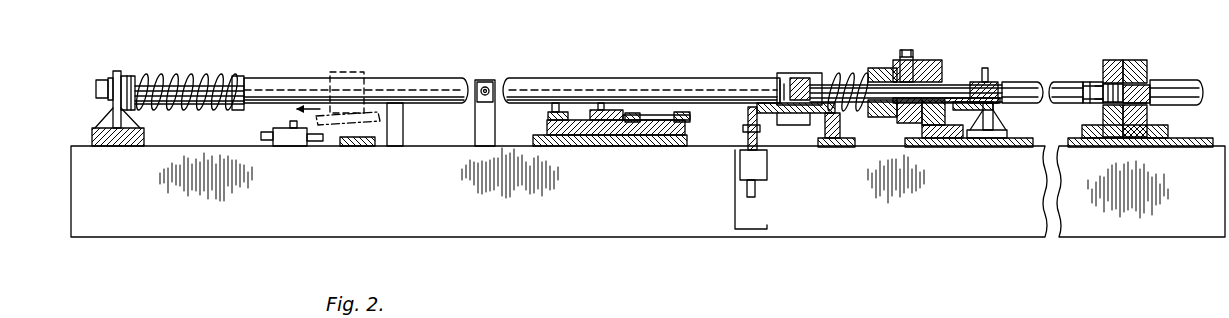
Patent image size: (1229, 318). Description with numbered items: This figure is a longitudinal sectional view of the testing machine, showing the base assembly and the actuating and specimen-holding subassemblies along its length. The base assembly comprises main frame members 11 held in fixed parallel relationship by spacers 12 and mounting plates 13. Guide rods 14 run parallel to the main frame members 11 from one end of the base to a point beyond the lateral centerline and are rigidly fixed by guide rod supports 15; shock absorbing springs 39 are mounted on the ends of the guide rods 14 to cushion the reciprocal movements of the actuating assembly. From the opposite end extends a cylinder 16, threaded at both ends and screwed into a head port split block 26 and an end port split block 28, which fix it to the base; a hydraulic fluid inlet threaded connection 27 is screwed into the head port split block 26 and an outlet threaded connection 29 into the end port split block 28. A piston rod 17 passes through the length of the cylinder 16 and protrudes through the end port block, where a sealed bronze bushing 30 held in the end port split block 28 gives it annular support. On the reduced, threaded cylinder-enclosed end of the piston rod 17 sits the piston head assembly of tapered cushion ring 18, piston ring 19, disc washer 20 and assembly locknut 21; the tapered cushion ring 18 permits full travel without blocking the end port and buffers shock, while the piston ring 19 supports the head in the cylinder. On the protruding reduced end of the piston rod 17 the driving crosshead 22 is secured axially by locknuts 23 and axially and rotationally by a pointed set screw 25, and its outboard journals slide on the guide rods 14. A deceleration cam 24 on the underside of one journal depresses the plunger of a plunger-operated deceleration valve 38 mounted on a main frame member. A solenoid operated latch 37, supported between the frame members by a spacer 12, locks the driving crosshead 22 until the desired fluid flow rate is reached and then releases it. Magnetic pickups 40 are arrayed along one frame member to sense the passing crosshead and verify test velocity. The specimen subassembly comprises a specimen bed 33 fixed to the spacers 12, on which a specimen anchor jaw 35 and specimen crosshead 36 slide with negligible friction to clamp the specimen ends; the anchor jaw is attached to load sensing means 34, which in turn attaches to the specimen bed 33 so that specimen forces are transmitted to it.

The main frame members 11 is at (682, 229).
The spacers 12 is at (134, 147).
The mounting plates 13 is at (990, 146).
The guide rods 14 is at (393, 79).
The guide rod supports 15 is at (118, 70).
The cylinder 16 is at (1024, 83).
The piston rod 17 is at (865, 90).
The tapered cushion ring 18 is at (1100, 86).
The piston ring 19 is at (1103, 105).
The disc washer 20 is at (1115, 82).
The assembly locknut 21 is at (1148, 116).
The driving crosshead 22 is at (783, 80).
The locknuts 23 is at (783, 117).
The deceleration cam 24 is at (348, 121).
The pointed set screw 25 is at (801, 80).
The head port split block 26 is at (1131, 61).
The hydraulic fluid inlet threaded connection 27 is at (1141, 97).
The end port split block 28 is at (938, 62).
The outlet threaded connection 29 is at (906, 54).
The sealed bronze bushing 30 is at (882, 107).
The specimen bed 33 is at (682, 128).
The load sensing means 34 is at (643, 115).
The specimen anchor jaw 35 is at (603, 110).
The specimen crosshead 36 is at (556, 113).
The solenoid operated latch 37 is at (762, 170).
The plunger-operated deceleration valve 38 is at (289, 141).
The shock absorbing springs 39 is at (183, 80).
The magnetic pickups 40 is at (485, 81).